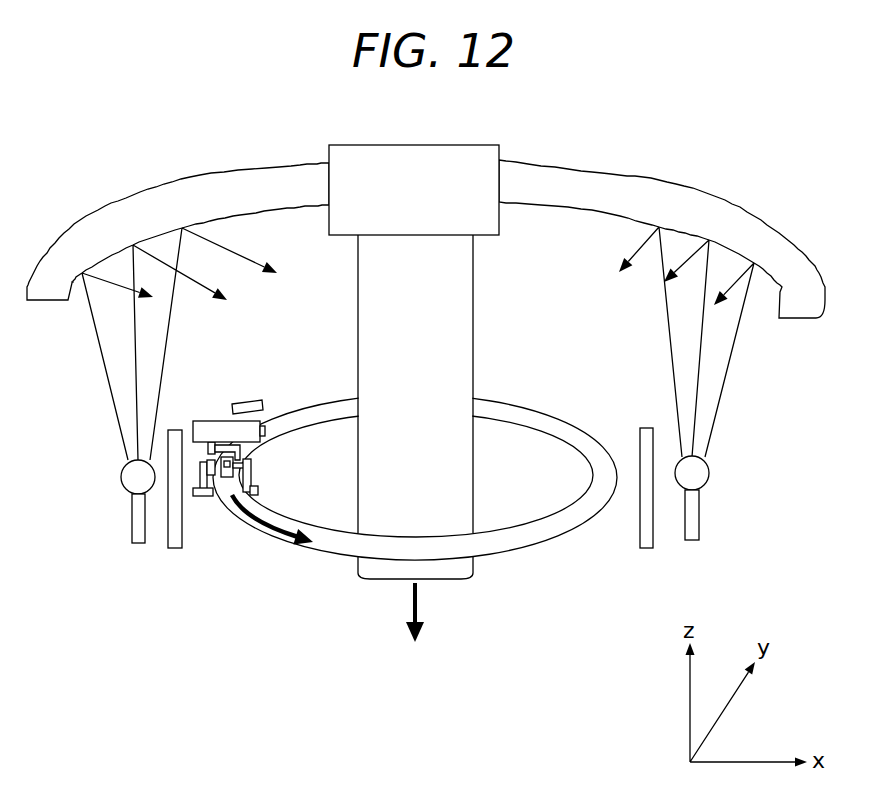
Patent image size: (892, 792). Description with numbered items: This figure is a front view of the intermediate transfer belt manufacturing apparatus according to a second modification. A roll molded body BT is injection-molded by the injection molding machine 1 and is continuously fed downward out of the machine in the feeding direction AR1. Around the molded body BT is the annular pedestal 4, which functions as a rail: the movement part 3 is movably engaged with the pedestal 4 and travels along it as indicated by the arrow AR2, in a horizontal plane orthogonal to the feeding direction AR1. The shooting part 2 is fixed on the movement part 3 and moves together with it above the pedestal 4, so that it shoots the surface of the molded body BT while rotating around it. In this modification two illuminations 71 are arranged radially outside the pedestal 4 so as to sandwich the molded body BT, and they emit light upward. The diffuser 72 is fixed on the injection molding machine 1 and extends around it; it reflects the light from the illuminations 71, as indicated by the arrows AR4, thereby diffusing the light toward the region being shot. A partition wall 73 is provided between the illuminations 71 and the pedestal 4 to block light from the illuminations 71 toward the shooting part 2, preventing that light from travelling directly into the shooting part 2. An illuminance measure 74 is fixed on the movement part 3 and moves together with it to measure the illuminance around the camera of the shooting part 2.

The injection molding machine 1 is at (447, 157).
The shooting part 2 is at (203, 420).
The movement part 3 is at (200, 493).
The pedestal 4 is at (343, 542).
The illuminations 71 is at (127, 480).
The diffuser 72 is at (247, 173).
The partition wall 73 is at (177, 552).
The illuminance measure 74 is at (248, 400).
The roll molded body BT is at (380, 254).
The feeding direction AR1 is at (422, 603).
The movement direction of movement part AR2 is at (278, 520).
The reflected light direction AR4 is at (104, 368).